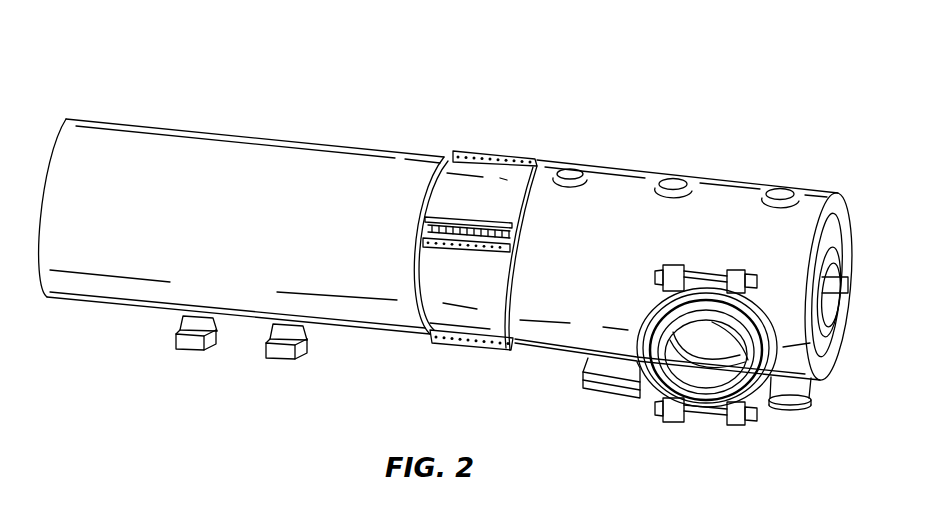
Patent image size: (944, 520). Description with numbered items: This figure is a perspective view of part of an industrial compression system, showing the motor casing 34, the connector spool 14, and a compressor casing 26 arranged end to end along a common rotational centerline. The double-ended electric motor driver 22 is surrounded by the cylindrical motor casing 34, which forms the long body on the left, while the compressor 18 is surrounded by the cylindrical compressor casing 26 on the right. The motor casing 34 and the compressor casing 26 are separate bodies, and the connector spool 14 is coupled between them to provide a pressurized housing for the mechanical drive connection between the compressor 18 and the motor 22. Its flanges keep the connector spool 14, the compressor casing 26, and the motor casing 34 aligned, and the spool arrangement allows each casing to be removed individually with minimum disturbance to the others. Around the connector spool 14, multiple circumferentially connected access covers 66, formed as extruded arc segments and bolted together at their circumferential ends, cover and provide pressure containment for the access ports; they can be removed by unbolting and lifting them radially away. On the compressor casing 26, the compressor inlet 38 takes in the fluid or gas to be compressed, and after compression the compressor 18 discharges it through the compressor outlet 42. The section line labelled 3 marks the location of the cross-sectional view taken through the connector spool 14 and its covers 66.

The double-ended electric motor driver 22 is at (243, 195).
The motor casing 34 is at (197, 148).
The connector spool 14 is at (446, 211).
The access cover 66 is at (445, 192).
The section line 3- 3 is at (507, 140).
The compressor 18 is at (687, 238).
The compressor casing 26 is at (624, 186).
The compressor inlet 38 is at (648, 362).
The compressor outlet 42 is at (798, 413).